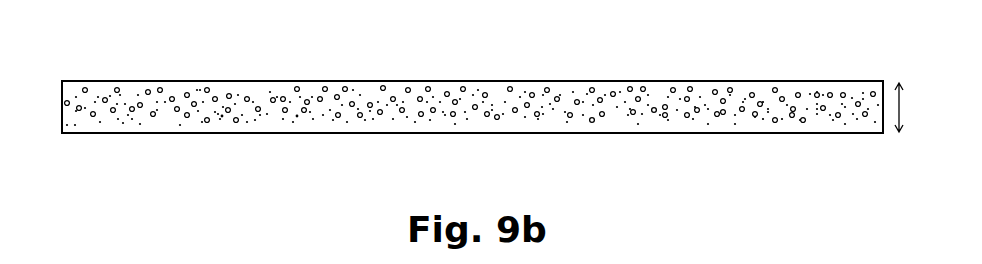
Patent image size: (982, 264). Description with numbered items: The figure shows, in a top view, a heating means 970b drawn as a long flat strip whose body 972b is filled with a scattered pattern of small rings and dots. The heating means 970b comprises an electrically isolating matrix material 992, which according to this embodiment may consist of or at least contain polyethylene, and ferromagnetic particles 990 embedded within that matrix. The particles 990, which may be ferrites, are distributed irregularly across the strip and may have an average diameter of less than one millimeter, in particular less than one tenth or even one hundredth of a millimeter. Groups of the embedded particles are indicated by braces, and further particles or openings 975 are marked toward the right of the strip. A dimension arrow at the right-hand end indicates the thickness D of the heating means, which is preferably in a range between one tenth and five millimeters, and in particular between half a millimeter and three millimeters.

The heating means 970b is at (105, 57).
The matrix material 972b is at (736, 133).
The ferromagnetic particles 990 is at (297, 117).
The openings 975 is at (654, 112).
The electrically isolating matrix material 992 is at (123, 123).
The thickness D is at (907, 107).